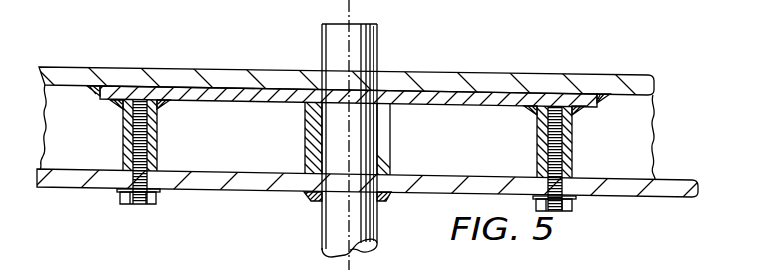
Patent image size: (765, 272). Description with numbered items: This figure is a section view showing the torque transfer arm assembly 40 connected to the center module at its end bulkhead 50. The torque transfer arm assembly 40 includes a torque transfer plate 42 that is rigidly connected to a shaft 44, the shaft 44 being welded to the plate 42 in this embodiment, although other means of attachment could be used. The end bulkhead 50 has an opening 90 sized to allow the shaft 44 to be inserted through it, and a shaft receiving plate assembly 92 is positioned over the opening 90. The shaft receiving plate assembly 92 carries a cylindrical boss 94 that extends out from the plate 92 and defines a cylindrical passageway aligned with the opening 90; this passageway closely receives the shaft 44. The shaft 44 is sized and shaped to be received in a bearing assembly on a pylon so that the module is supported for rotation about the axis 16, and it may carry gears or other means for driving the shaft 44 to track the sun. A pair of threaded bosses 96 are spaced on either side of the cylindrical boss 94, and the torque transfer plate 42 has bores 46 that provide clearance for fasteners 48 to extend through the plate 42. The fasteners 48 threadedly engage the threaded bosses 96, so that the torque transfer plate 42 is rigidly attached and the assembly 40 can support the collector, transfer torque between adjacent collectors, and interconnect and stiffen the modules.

The axis 16 is at (350, 17).
The torque transfer arm assembly 40 is at (291, 217).
The torque transfer plate 42 is at (446, 189).
The shaft 44 is at (324, 225).
The bores 46 is at (127, 196).
The fasteners 48 is at (153, 201).
The end bulkhead 50 is at (218, 67).
The opening 90 is at (348, 140).
The shaft receiving plate assembly 92 is at (495, 97).
The cylindrical boss 94 is at (384, 137).
The threaded bosses 96 is at (157, 143).